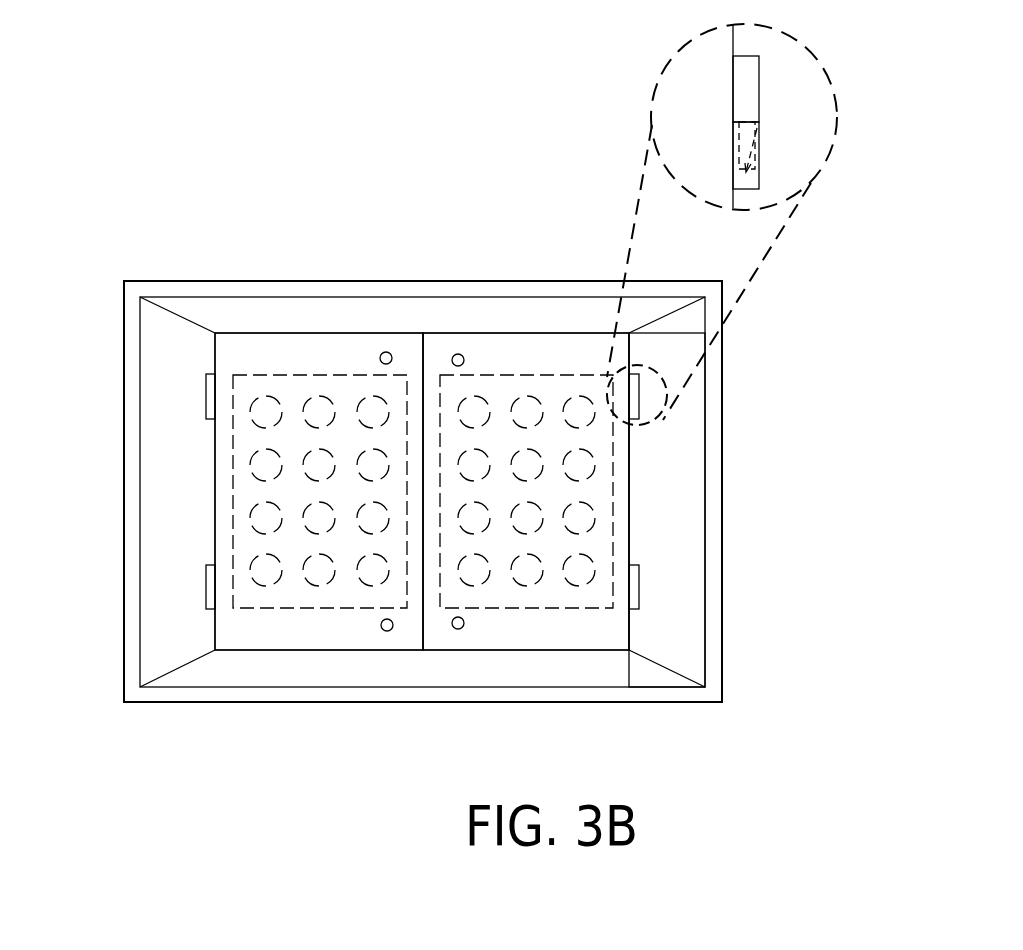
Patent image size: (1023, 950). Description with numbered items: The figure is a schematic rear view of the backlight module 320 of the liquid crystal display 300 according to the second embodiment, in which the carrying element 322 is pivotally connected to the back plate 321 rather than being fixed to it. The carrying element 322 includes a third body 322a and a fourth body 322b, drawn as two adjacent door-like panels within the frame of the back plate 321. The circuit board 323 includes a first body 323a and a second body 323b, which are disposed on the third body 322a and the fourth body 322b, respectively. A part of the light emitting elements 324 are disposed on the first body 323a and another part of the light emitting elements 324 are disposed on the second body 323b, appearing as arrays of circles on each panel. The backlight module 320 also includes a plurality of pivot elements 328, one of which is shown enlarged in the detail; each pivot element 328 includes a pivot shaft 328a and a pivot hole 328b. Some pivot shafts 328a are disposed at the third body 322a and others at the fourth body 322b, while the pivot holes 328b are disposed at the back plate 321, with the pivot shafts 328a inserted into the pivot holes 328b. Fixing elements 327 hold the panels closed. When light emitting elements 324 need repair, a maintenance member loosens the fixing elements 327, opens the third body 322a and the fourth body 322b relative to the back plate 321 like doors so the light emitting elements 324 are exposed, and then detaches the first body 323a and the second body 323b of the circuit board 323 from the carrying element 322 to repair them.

The liquid crystal display 300 is at (837, 732).
The backlight module 320 is at (747, 320).
The back plate 321 is at (682, 447).
The carrying element 322 is at (552, 228).
The third body 322a is at (515, 347).
The fourth body 322b is at (308, 347).
The circuit board 323 is at (552, 754).
The first body 323a is at (505, 593).
The second body 323b is at (305, 595).
The light emitting elements 324 is at (578, 518).
The fixing elements 327 is at (380, 358).
The pivot elements 328 is at (870, 113).
The pivot shaft 328a is at (747, 140).
The pivot hole 328b is at (757, 152).